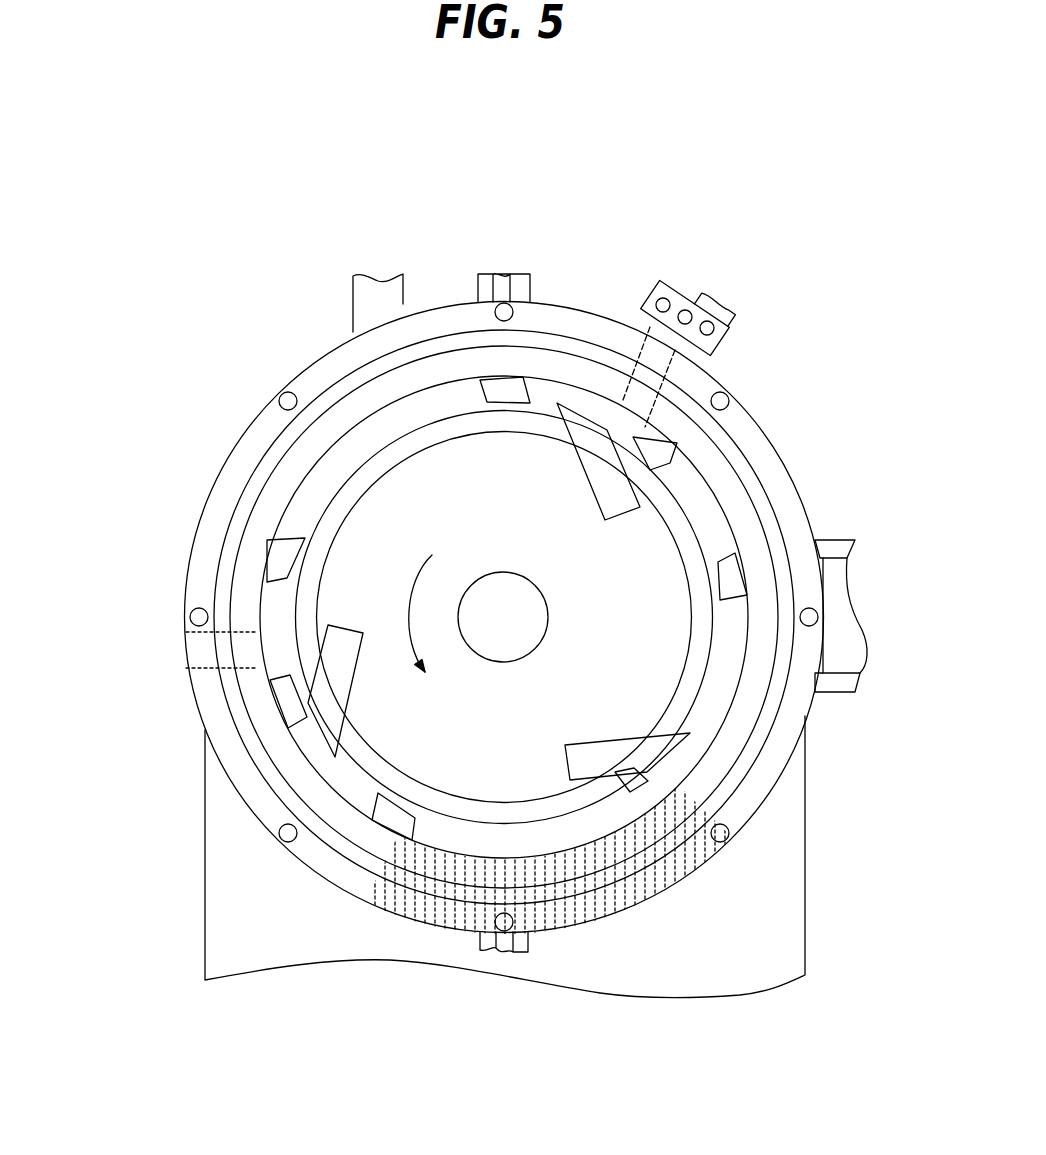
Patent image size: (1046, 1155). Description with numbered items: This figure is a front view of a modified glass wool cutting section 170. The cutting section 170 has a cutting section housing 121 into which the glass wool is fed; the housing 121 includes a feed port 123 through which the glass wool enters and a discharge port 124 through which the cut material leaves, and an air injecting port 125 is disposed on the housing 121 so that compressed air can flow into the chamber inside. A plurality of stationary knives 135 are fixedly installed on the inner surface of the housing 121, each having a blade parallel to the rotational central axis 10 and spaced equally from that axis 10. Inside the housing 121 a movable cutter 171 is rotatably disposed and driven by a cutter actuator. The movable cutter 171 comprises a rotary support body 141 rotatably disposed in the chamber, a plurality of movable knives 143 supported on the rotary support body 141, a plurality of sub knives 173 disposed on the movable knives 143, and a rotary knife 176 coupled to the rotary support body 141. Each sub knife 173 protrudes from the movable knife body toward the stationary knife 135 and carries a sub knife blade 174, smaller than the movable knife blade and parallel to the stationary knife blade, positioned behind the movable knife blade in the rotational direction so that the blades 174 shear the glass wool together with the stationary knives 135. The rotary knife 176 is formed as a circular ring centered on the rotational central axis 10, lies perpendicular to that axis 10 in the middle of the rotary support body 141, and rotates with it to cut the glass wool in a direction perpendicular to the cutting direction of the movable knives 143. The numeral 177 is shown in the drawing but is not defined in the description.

The rotational central axis 10 is at (505, 617).
The cutting section housing 121 is at (303, 368).
The feed port 123 is at (303, 680).
The discharge port 124 is at (400, 890).
The air injecting port 125 is at (640, 325).
The stationary knife 135 is at (280, 558).
The rotary support body 141 is at (463, 468).
The movable knife 143 is at (583, 405).
The glass wool cutting section 170 is at (746, 258).
The movable cutter 171 is at (433, 417).
The sub knife 173 is at (710, 472).
The sub knife blade 174 is at (650, 783).
The rotary knife 176 is at (688, 689).
The outer ring 177 is at (710, 645).